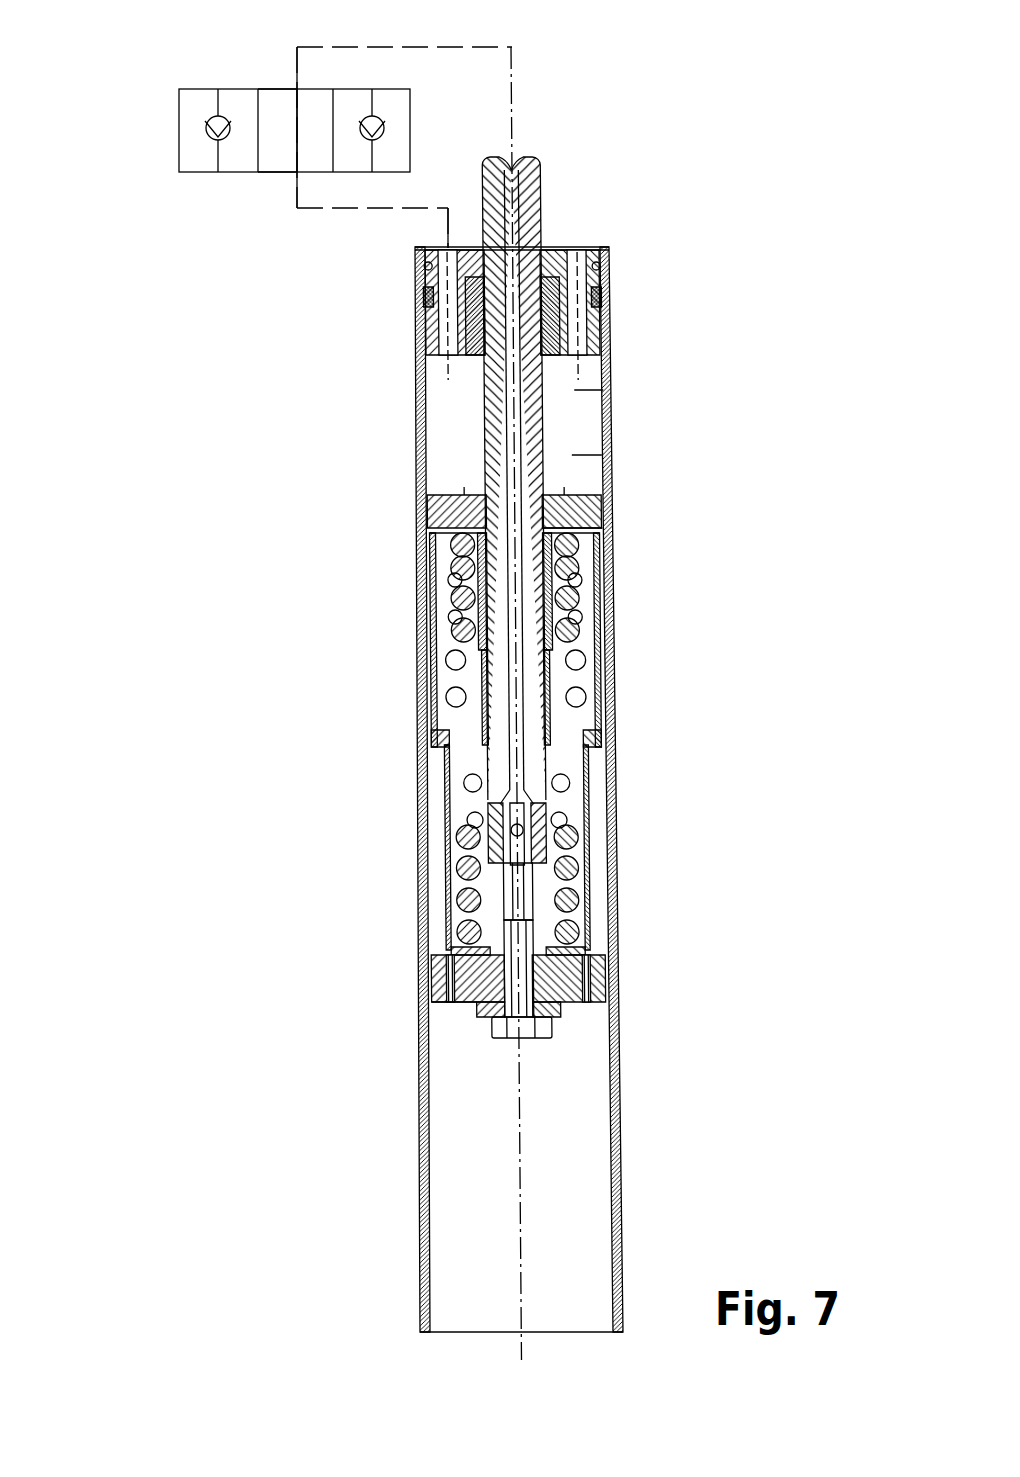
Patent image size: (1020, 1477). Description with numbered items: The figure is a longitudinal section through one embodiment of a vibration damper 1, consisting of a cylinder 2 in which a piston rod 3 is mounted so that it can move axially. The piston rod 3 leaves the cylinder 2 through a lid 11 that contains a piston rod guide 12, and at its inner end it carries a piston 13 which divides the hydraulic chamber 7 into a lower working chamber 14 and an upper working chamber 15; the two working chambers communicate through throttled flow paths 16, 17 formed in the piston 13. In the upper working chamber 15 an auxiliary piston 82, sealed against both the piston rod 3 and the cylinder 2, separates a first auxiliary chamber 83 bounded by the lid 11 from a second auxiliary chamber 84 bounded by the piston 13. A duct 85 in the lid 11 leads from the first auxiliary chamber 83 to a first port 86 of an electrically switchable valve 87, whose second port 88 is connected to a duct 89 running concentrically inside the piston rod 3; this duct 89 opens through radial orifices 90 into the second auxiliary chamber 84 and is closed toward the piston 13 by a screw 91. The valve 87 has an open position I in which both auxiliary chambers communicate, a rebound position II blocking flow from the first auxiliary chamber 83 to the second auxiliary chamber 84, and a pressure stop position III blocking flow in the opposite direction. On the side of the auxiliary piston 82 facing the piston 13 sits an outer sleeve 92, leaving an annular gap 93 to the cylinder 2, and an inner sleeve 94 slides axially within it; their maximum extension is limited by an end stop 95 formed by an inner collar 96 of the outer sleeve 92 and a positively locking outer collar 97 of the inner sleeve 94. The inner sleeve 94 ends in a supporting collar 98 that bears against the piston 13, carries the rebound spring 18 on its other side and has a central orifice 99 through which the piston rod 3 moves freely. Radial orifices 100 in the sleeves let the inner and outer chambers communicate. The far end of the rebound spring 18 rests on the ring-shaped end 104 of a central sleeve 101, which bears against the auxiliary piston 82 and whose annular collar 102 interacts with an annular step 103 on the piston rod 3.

The vibration damper 1 is at (625, 237).
The cylinder 2 is at (622, 1163).
The piston rod 3 is at (462, 393).
The hydraulic chamber 7 is at (463, 1170).
The lid 11 is at (608, 278).
The piston rod guide 12 is at (608, 330).
The piston 13 is at (605, 1035).
The lower working chamber 14 is at (592, 1243).
The upper working chamber 15 is at (612, 450).
The throttled flow path 16 is at (605, 975).
The throttled flow path 17 is at (419, 998).
The rebound spring 18 is at (612, 570).
The auxiliary piston 82 is at (450, 492).
The first auxiliary chamber 83 is at (612, 388).
The second auxiliary chamber 84 is at (598, 847).
The duct 85 is at (418, 288).
The first port 86 is at (296, 172).
The electrically switchable valve 87 is at (266, 178).
The second port 88 is at (270, 100).
The duct 89 is at (521, 172).
The radial orifices 90 is at (475, 800).
The screw 91 is at (527, 1040).
The outer sleeve 92 is at (417, 603).
The annular gap 93 is at (413, 575).
The inner sleeve 94 is at (433, 856).
The end stop 95 is at (612, 723).
The inner collar 96 is at (427, 767).
The outer collar 97 is at (430, 748).
The supporting collar 98 is at (592, 932).
The central orifice 99 is at (421, 975).
The radial orifices 100 is at (412, 532).
The central sleeve 101 is at (460, 718).
The annular collar 102 is at (606, 733).
The annular step 103 is at (414, 636).
The ring-shaped end 104 is at (612, 530).
The open position I is at (263, 88).
The rebound position II is at (400, 105).
The pressure stop position III is at (197, 105).